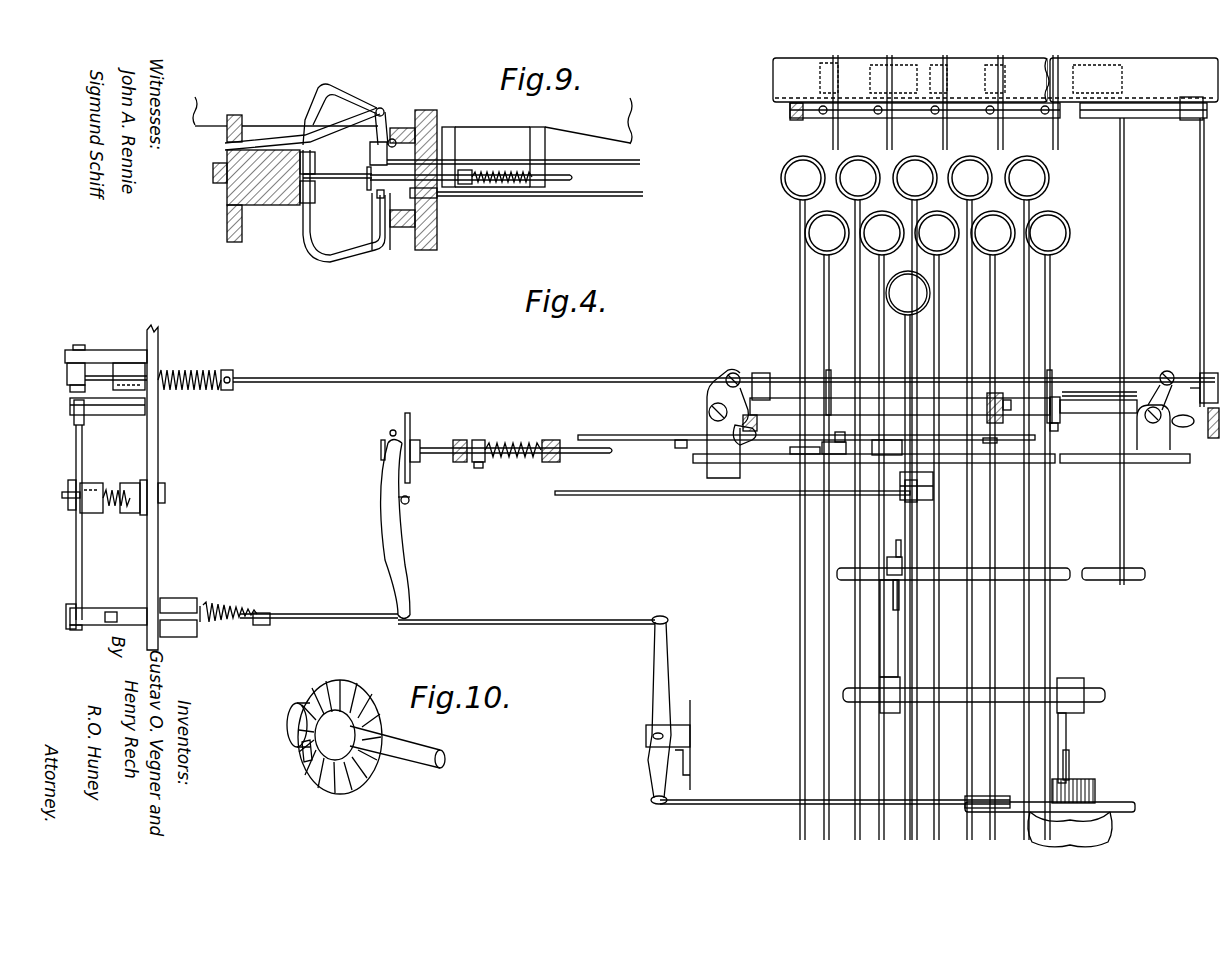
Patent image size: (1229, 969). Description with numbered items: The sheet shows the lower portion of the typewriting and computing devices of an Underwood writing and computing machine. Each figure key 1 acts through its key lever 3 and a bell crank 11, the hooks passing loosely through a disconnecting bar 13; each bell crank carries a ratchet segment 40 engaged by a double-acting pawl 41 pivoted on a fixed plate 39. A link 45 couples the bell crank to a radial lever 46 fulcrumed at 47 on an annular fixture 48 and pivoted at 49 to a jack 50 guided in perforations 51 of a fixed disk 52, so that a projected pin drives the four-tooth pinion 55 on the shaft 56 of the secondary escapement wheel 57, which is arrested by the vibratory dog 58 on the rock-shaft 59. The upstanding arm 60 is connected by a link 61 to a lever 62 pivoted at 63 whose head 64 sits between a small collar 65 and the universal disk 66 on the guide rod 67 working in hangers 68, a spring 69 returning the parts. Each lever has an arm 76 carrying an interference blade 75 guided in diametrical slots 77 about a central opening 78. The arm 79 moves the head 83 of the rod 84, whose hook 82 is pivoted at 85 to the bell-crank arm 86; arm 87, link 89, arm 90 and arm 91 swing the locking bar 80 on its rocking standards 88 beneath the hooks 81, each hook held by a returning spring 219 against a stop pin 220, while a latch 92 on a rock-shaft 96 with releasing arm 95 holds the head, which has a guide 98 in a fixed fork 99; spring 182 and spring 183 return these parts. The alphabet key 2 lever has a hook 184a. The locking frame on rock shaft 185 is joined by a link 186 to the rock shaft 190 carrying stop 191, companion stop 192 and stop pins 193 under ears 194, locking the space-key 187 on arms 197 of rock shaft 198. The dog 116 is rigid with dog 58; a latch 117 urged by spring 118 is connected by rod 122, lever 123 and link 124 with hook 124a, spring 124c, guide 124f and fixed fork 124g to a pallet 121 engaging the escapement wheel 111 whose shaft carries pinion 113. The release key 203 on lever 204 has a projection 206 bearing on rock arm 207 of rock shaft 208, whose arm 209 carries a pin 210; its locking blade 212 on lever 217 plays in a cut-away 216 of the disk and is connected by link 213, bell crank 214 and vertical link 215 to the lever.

In FIG. 4, the figure key 1 is at (990, 250).
In FIG. 4, the alphabet key 2 is at (805, 157).
In FIG. 4, the key lever 3 is at (855, 322).
In FIG. 4, the bell crank 11 is at (838, 442).
In FIG. 4, the disconnecting bar 13 is at (683, 446).
In FIG. 9, the fixed plate 39 is at (588, 121).
In FIG. 4, the fixed plate 39 is at (698, 463).
In FIG. 4, the ratchet segment 40 is at (834, 455).
In FIG. 4, the double-acting pawl 41 is at (812, 455).
In FIG. 9, the link 45 is at (572, 159).
In FIG. 4, the link 45 is at (597, 435).
In FIG. 9, the lever 46 is at (390, 122).
In FIG. 9, the fulcrum 47 is at (387, 143).
In FIG. 9, the annular fixture 48 is at (436, 127).
In FIG. 9, the pivot 49 is at (383, 108).
In FIG. 9, the jack 50 is at (344, 110).
In FIG. 9, the perforations 51 is at (226, 137).
In FIG. 9, the fixed disk 52 is at (282, 206).
In FIG. 4, the four-tooth pinion 55 is at (166, 490).
In FIG. 4, the shaft 56 is at (112, 506).
In FIG. 4, the secondary escapement wheel 57 is at (76, 453).
In FIG. 4, the vibratory dog 58 is at (67, 500).
In FIG. 4, the rock-shaft 59 is at (83, 567).
In FIG. 4, the upstanding arm 60 is at (70, 613).
In FIG. 4, the link 61 is at (300, 614).
In FIG. 4, the lever 62 is at (398, 555).
In FIG. 4, the pivot 63 is at (409, 501).
In FIG. 9, the head 64 is at (367, 174).
In FIG. 4, the head 64 is at (393, 442).
In FIG. 9, the small collar 65 is at (372, 187).
In FIG. 10, the small collar 65 is at (287, 732).
In FIG. 4, the small collar 65 is at (380, 448).
In FIG. 9, the universal disk 66 is at (438, 128).
In FIG. 10, the universal disk 66 is at (344, 680).
In FIG. 4, the universal disk 66 is at (411, 436).
In FIG. 9, the guide rod 67 is at (572, 178).
In FIG. 10, the guide rod 67 is at (417, 749).
In FIG. 4, the guide rod 67 is at (442, 447).
In FIG. 9, the hangers 68 is at (528, 138).
In FIG. 4, the hangers 68 is at (542, 441).
In FIG. 9, the spring 69 is at (518, 184).
In FIG. 4, the spring 69 is at (532, 456).
In FIG. 9, the key-interference blade 75 is at (320, 106).
In FIG. 9, the arm 76 is at (345, 96).
In FIG. 9, the diametrical slots 77 is at (316, 158).
In FIG. 9, the central opening 78 is at (322, 180).
In FIG. 4, the arm 79 is at (72, 386).
In FIG. 4, the locking bar 80 is at (780, 408).
In FIG. 4, the hook 81 is at (830, 375).
In FIG. 4, the hook 82 is at (72, 376).
In FIG. 4, the head 83 is at (163, 378).
In FIG. 4, the rod 84 is at (398, 373).
In FIG. 4, the pivot 85 is at (733, 373).
In FIG. 4, the bell-crank arm 86 is at (708, 395).
In FIG. 4, the bell-crank arm 87 is at (742, 447).
In FIG. 4, the rocking standards 88 is at (1214, 372).
In FIG. 4, the link 89 is at (1083, 392).
In FIG. 4, the bell-crank arm 90 is at (1162, 375).
In FIG. 4, the bell-crank arm 91 is at (1178, 426).
In FIG. 4, the latch 92 is at (147, 405).
In FIG. 4, the arm 95 is at (74, 428).
In FIG. 4, the rock-shaft 96 is at (118, 413).
In FIG. 4, the guide 98 is at (130, 365).
In FIG. 4, the fixed fork 99 is at (150, 363).
In FIG. 4, the escapement wheel 111 is at (1110, 805).
In FIG. 4, the pinion 113 is at (1096, 788).
In FIG. 4, the dog 116 is at (95, 488).
In FIG. 4, the latch 117 is at (128, 612).
In FIG. 4, the spring 118 is at (155, 595).
In FIG. 4, the pallet 121 is at (1033, 815).
In FIG. 4, the rod 122 is at (745, 800).
In FIG. 4, the lever 123 is at (670, 668).
In FIG. 4, the link 124 is at (530, 620).
In FIG. 4, the hook 124a is at (103, 617).
In FIG. 4, the spring 124c is at (243, 626).
In FIG. 4, the guide 124f is at (199, 606).
In FIG. 4, the fixed fork 124g is at (183, 637).
In FIG. 4, the returning spring 182 is at (213, 375).
In FIG. 4, the spring 183 is at (750, 432).
In FIG. 4, the hook 184a is at (965, 385).
In FIG. 4, the rock shaft 185 is at (782, 373).
In FIG. 4, the link 186 is at (1200, 226).
In FIG. 4, the space-key 187 is at (1153, 97).
In FIG. 4, the rock shaft 190 is at (1113, 118).
In FIG. 4, the stop 191 is at (1198, 103).
In FIG. 4, the companion stop 192 is at (795, 122).
In FIG. 4, the stop pins 193 is at (935, 115).
In FIG. 4, the ears 194 is at (823, 105).
In FIG. 4, the arms 197 is at (870, 147).
In FIG. 4, the rock shaft 198 is at (1140, 569).
In FIG. 4, the release key 203 is at (931, 290).
In FIG. 4, the lever 204 is at (910, 618).
In FIG. 4, the projection 206 is at (903, 560).
In FIG. 4, the rock arm 207 is at (880, 628).
In FIG. 4, the rock shaft 208 is at (1090, 688).
In FIG. 4, the arm 209 is at (1067, 732).
In FIG. 4, the pin 210 is at (1072, 766).
In FIG. 9, the locking blade 212 is at (308, 240).
In FIG. 4, the link 213 is at (621, 496).
In FIG. 4, the bell crank 214 is at (933, 478).
In FIG. 4, the vertical link 215 is at (908, 495).
In FIG. 10, the cut-away 216 is at (306, 763).
In FIG. 9, the lever 217 is at (387, 237).
In FIG. 4, the returning spring 219 is at (986, 408).
In FIG. 4, the stop pin 220 is at (1060, 437).